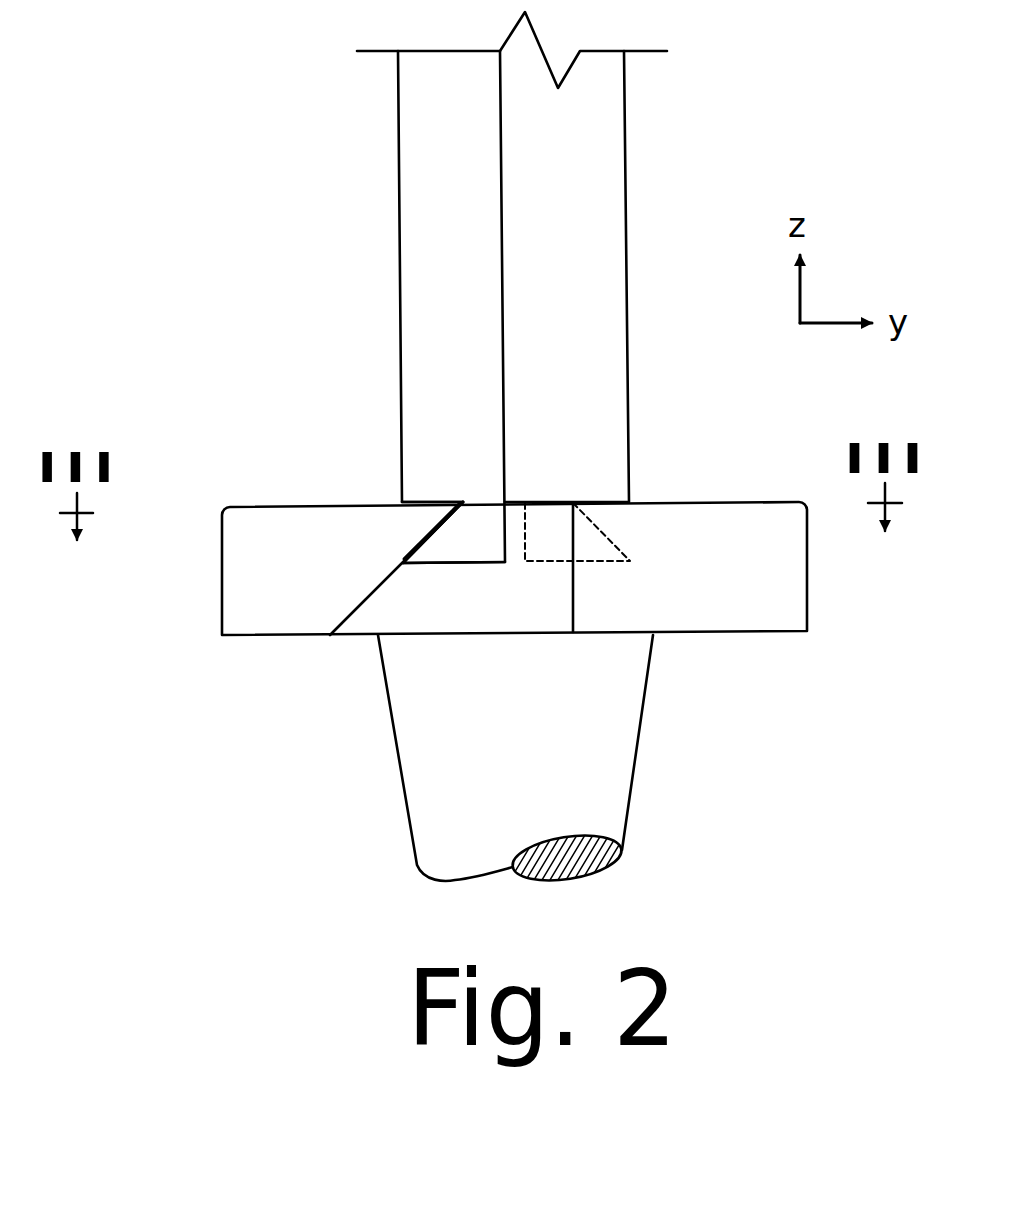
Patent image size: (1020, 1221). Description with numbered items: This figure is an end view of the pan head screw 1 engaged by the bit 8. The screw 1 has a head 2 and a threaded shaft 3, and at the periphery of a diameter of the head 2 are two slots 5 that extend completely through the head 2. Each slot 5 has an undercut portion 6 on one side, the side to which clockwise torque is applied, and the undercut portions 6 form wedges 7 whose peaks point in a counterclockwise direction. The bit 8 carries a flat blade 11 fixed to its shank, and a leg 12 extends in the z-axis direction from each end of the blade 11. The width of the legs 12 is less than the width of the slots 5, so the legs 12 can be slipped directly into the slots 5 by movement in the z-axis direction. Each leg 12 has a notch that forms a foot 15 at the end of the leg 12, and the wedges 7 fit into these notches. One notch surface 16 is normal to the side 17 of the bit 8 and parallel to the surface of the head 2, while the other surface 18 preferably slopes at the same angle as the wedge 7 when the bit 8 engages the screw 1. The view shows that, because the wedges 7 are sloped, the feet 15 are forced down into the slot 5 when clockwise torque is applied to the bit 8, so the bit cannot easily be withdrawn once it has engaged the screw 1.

The pan head screw 1 is at (514, 652).
The head 2 is at (748, 502).
The threaded shaft 3 is at (392, 735).
The slot 5 is at (480, 598).
The undercut portion 6 is at (393, 590).
The wedge 7 is at (415, 523).
The bit 8 is at (427, 314).
The flat blade 11 is at (627, 293).
The leg 12 is at (507, 530).
The foot 15 is at (428, 552).
The surface 16 is at (433, 500).
The side 17 is at (398, 280).
The surface 18 is at (422, 540).